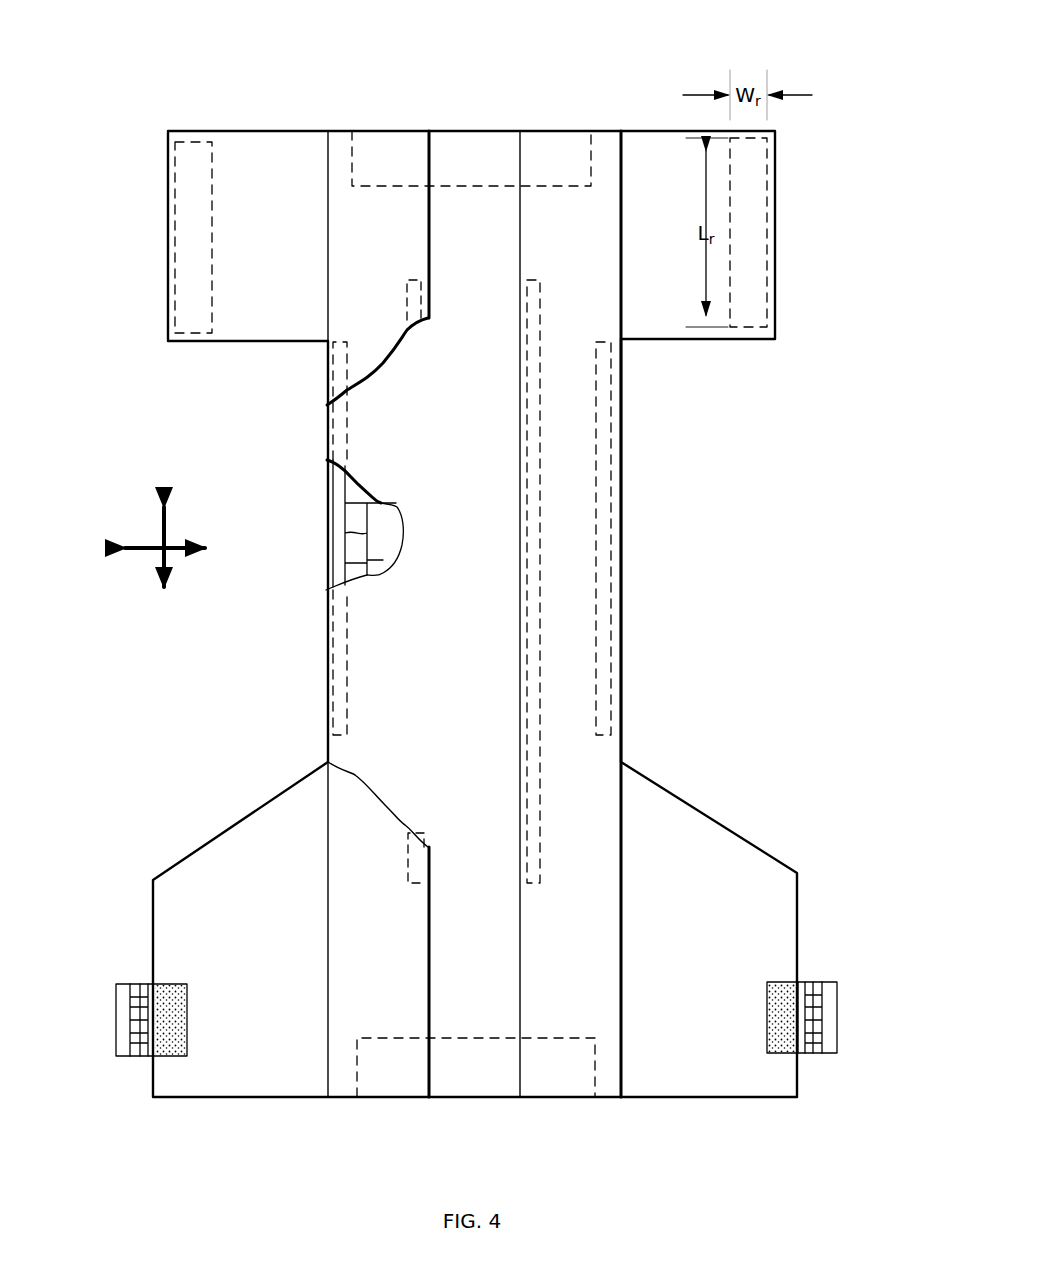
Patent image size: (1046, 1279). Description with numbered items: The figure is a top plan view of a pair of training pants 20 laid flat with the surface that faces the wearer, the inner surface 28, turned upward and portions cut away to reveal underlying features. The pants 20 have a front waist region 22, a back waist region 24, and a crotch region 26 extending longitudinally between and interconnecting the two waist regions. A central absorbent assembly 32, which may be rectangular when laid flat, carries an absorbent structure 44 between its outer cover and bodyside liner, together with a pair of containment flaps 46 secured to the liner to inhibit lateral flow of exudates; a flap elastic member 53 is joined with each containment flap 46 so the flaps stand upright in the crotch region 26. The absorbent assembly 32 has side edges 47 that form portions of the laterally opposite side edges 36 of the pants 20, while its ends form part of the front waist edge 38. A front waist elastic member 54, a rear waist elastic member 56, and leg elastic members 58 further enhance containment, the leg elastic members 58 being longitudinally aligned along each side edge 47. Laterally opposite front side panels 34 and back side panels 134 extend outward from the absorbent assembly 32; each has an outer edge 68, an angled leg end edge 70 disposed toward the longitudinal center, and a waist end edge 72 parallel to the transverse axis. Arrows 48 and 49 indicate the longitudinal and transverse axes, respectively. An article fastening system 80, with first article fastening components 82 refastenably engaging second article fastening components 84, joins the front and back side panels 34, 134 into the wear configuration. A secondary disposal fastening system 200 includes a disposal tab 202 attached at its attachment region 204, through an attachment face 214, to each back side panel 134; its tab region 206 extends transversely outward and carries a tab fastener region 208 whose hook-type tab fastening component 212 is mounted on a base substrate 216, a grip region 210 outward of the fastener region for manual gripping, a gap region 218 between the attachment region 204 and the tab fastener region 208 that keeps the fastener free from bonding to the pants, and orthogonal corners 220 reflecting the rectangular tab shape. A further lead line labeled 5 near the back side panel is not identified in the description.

The training pants 20 is at (621, 54).
The front waist region 22 is at (650, 362).
The back waist region 24 is at (297, 760).
The crotch region 26 is at (648, 505).
The inner surface 28 is at (556, 203).
The central absorbent assembly 32 is at (345, 613).
The front side panels 34 is at (262, 243).
The back side panels 134 is at (250, 888).
The side edges 36 is at (260, 341).
The front waist edge 38 is at (390, 130).
The absorbent structure 44 is at (367, 533).
The containment flaps 46 is at (340, 135).
The side edges of absorbent assembly 47 is at (326, 422).
The longitudinal axis arrow 48 is at (162, 526).
The transverse axis arrow 49 is at (175, 552).
The flap elastic member 53 is at (405, 291).
The front waist elastic member 54 is at (476, 148).
The rear waist elastic member 56 is at (475, 1075).
The leg elastic members 58 is at (340, 676).
The outer edge 68 is at (168, 243).
The leg end edge 70 is at (253, 810).
The waist end edge 72 is at (262, 130).
The article fastening system 80 is at (150, 287).
The first article fastening components 82 is at (215, 852).
The second article fastening components 84 is at (172, 178).
The tab edge 5 is at (770, 852).
The disposal fastening system 200 is at (128, 1110).
The disposal tab 202 is at (140, 984).
The attachment region 204 is at (175, 1057).
The tab region 206 is at (122, 984).
The tab fastener region 208 is at (133, 1057).
The grip region 210 is at (116, 1000).
The tab fastening component 212 is at (145, 1057).
The attachment face 214 is at (172, 984).
The base substrate 216 is at (190, 1040).
The gap region 218 is at (150, 1043).
The orthogonal corners 220 is at (116, 1043).